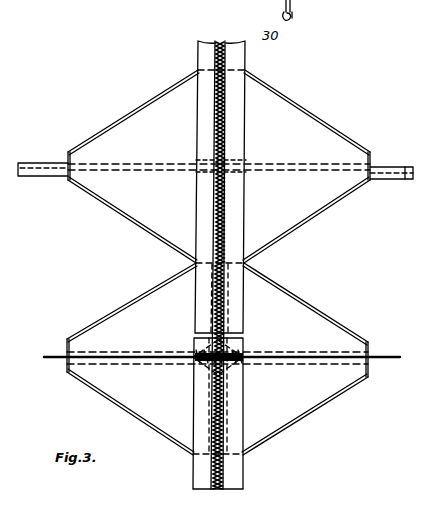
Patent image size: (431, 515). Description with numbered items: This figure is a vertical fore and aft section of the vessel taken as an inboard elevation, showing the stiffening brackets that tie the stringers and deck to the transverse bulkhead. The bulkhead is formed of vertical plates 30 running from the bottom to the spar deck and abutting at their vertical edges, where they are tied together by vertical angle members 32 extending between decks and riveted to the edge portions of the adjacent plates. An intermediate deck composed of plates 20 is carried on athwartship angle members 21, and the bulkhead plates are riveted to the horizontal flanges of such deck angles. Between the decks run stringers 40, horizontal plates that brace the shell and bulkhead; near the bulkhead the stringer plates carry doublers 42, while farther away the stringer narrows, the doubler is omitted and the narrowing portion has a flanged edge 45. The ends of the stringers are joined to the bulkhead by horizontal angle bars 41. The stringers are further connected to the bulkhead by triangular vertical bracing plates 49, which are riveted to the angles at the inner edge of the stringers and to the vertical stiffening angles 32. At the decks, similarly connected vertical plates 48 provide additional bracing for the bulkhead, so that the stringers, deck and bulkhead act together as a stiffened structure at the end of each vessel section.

The intermediate deck plates 20 is at (400, 357).
The athwartship angle members 21 is at (196, 352).
The vertical plates 30 is at (245, 113).
The vertical angle members 32 is at (197, 216).
The stringers 40 is at (401, 166).
The horizontal angle bars 41 is at (215, 152).
The doublers 42 is at (313, 173).
The flanged edge 45 is at (407, 181).
The vertical plates 48 is at (217, 359).
The vertical bracing plates 49 is at (303, 129).